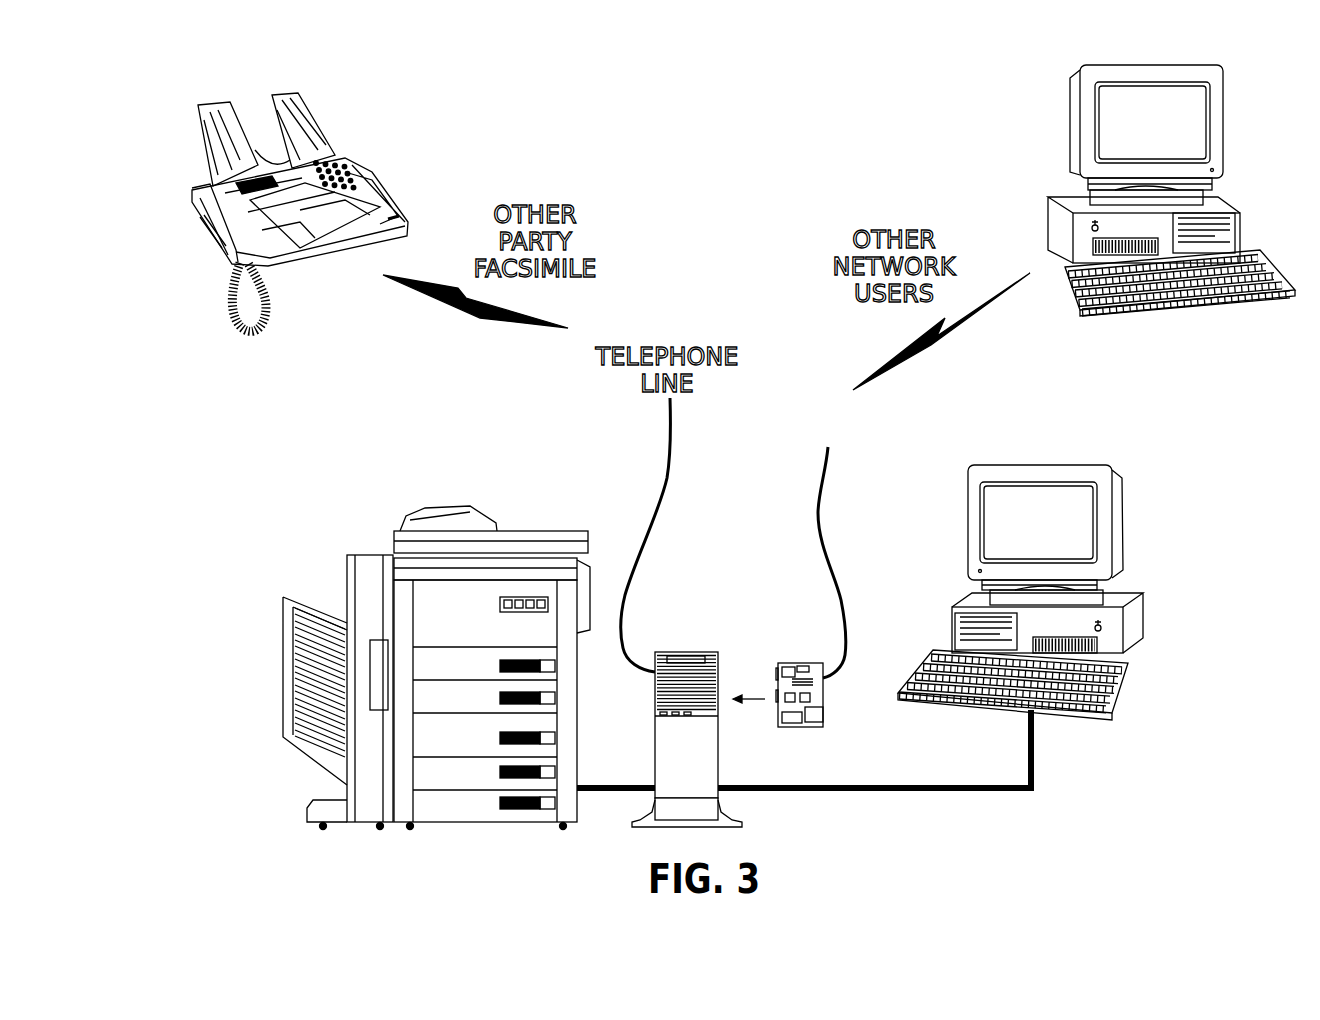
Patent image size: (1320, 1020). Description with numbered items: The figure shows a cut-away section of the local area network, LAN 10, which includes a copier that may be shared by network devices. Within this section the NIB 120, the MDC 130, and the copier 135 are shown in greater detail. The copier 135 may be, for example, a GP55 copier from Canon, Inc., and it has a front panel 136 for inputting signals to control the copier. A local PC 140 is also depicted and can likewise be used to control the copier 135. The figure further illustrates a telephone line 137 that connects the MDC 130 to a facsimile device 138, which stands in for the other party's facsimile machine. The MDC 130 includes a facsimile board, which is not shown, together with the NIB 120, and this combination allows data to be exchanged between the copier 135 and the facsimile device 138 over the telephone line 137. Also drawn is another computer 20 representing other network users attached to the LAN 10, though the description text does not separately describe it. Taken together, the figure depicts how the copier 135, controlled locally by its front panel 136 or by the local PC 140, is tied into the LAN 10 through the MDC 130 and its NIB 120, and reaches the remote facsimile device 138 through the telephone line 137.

The LAN 10 is at (862, 418).
The other network user computer 20 is at (1223, 87).
The NIB 120 is at (795, 727).
The MDC 130 is at (726, 649).
The copier 135 is at (321, 528).
The front panel 136 is at (537, 597).
The telephone line 137 is at (665, 480).
The facsimile device 138 is at (380, 180).
The local PC 140 is at (1125, 517).